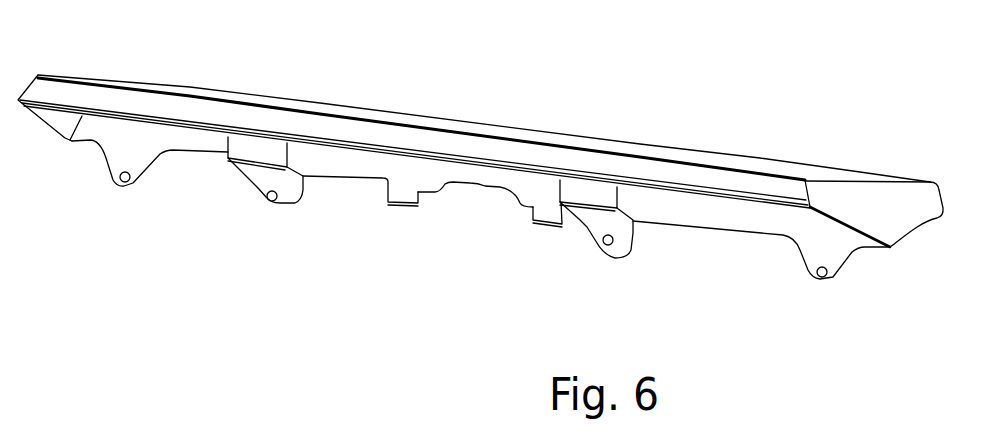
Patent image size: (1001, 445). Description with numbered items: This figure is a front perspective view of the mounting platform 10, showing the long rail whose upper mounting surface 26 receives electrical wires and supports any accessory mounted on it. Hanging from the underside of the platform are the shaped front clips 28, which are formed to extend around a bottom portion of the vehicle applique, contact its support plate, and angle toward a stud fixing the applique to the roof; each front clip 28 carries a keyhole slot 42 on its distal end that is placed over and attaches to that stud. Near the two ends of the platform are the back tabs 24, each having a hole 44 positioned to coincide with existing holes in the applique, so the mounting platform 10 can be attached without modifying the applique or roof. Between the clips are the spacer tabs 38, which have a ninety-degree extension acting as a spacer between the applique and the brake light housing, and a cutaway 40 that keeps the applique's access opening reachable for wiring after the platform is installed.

The mounting platform 10 is at (795, 142).
The back tabs 24 is at (137, 187).
The mounting surface 26 is at (527, 128).
The shaped front clips 28 is at (293, 207).
The spacer tabs 38 is at (405, 207).
The cutaway 40 is at (473, 181).
The keyhole slots 42 is at (266, 197).
The holes 44 is at (117, 185).